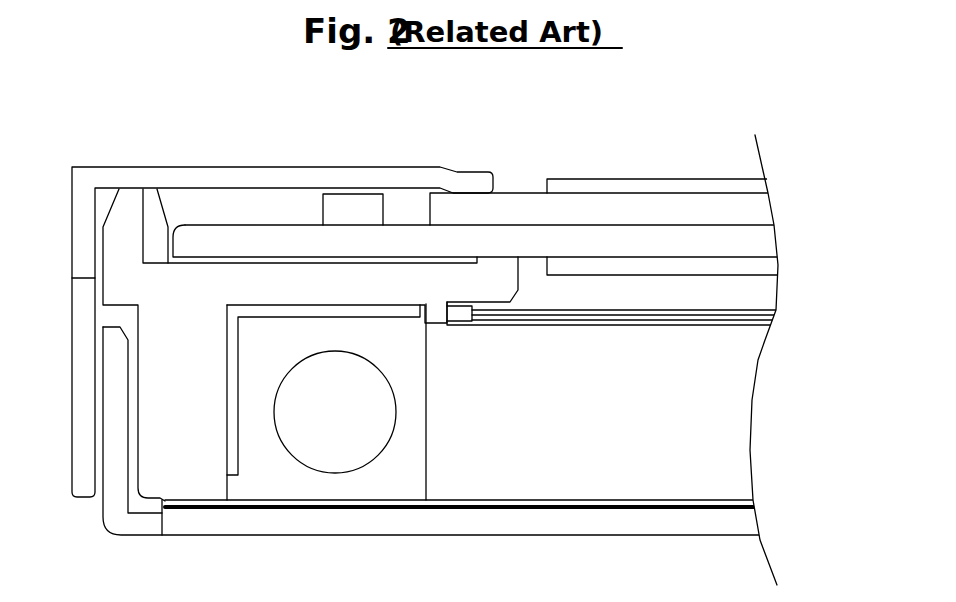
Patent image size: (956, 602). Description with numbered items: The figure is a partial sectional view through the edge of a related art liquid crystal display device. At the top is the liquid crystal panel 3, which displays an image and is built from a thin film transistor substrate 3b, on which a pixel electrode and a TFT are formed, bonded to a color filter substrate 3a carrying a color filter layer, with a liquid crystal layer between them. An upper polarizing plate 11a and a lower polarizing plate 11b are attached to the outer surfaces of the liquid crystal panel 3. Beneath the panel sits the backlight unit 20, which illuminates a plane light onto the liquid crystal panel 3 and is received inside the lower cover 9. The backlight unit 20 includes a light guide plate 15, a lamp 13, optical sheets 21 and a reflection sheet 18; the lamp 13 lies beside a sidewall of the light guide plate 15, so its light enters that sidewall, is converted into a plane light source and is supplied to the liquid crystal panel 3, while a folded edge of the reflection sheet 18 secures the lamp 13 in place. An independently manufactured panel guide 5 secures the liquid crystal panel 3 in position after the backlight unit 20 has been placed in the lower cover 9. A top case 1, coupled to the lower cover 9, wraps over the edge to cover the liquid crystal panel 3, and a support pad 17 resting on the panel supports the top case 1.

The top case 1 is at (80, 227).
The liquid crystal panel 3 is at (529, 224).
The color filter substrate 3a is at (747, 208).
The thin film transistor (TFT) substrate 3b is at (747, 237).
The panel guide 5 is at (175, 400).
The lower cover 9 is at (177, 523).
The upper polarizing plate 11a is at (678, 180).
The lower polarizing plate 11b is at (747, 265).
The lamp 13 is at (322, 445).
The light guide plate 15 is at (737, 413).
The support pad 17 is at (357, 200).
The reflection sheet 18 is at (238, 312).
The backlight unit 20 is at (761, 455).
The optical sheets 21 is at (781, 318).